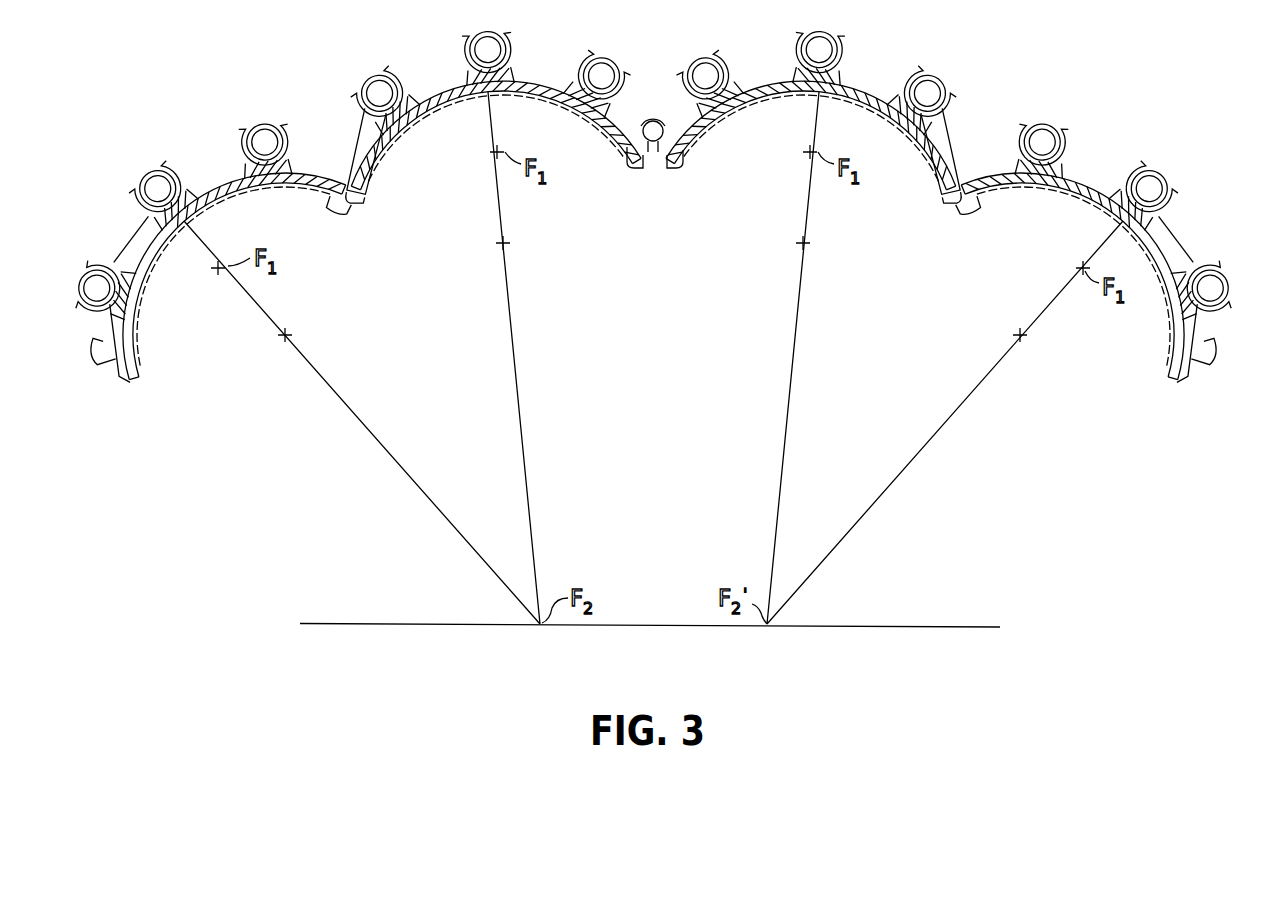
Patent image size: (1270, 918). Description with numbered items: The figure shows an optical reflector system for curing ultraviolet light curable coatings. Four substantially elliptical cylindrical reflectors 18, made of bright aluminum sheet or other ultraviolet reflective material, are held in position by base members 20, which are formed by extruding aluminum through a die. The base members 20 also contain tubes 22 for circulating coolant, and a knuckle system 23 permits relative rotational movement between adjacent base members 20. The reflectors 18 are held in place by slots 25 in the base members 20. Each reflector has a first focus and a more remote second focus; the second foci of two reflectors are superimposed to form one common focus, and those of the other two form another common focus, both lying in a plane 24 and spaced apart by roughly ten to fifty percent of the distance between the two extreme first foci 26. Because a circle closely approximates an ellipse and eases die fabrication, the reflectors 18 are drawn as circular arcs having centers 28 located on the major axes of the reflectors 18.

The substantially elliptical cylindrical reflector 18 is at (300, 190).
The base member 20 is at (362, 147).
The tube 22 is at (103, 262).
The knuckle system 23 is at (653, 143).
The plane 24 is at (912, 625).
The slot 25 is at (366, 207).
The extreme first focus 26 is at (214, 270).
The center 28 is at (1024, 337).